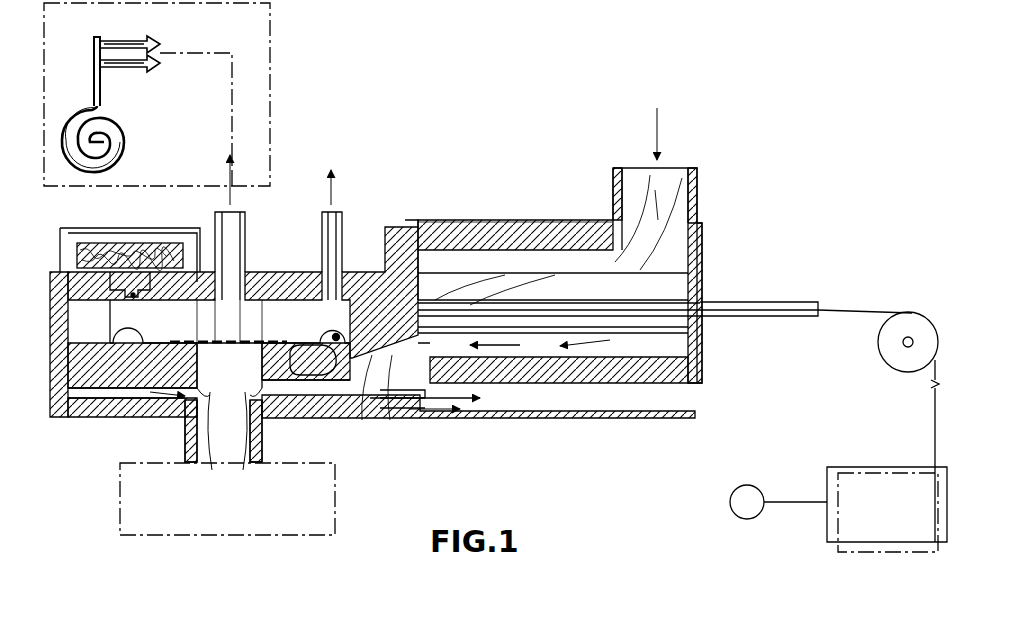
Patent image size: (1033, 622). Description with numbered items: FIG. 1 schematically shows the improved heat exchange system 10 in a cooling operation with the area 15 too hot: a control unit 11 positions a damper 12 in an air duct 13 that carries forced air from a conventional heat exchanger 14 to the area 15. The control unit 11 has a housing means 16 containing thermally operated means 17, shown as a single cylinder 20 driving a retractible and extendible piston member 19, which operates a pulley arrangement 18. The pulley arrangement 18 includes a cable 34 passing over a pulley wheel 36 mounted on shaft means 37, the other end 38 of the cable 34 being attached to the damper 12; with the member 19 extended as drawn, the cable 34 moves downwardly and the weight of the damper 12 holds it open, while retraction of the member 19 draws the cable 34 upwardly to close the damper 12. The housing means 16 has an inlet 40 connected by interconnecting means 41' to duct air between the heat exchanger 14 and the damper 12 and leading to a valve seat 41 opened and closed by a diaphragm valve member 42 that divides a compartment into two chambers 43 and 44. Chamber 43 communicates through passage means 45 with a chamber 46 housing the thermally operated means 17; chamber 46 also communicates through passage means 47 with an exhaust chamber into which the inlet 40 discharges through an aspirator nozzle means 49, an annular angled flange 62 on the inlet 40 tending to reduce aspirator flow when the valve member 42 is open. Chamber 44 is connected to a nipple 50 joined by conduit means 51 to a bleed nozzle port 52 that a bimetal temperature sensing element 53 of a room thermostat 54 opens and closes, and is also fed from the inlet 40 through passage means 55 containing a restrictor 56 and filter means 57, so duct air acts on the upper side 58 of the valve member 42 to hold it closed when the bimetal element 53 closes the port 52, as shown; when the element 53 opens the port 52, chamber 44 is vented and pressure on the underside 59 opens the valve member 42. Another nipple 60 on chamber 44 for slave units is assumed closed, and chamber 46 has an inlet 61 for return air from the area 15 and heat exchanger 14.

The heat exchange system 10 is at (790, 72).
The control unit 11 is at (480, 212).
The damper 12 is at (870, 553).
The air duct 13 is at (870, 465).
The heat exchanger 14 is at (736, 514).
The area 15 is at (252, 92).
The housing means 16 is at (505, 222).
The thermally operated means 17 is at (682, 288).
The pulley arrangement 18 is at (890, 292).
The retractible and extendible member 19 is at (765, 300).
The cylinder 20 is at (705, 328).
The cable 34 is at (862, 282).
The pulley wheel 36 is at (910, 320).
The shaft means 37 is at (902, 346).
The other end of cable 38 is at (917, 548).
The inlet 40 is at (185, 432).
The valve seat 41 is at (230, 326).
The interconnecting means 41' is at (185, 515).
The diaphragm valve member 42 is at (236, 312).
The chamber 43 is at (112, 355).
The chamber 44 is at (118, 312).
The passage means 45 is at (372, 360).
The chamber 46 is at (545, 262).
The passage means 47 is at (405, 390).
The aspirator nozzle means 49 is at (420, 400).
The nipple 50 is at (215, 225).
The conduit means 51 is at (232, 140).
The bleed nozzle port 52 is at (115, 66).
The bimetal temperature sensing element 53 is at (94, 80).
The thermostat 54 is at (136, 143).
The passage means 55 is at (153, 355).
The restrictor 56 is at (135, 296).
The filter means 57 is at (105, 243).
The upper side of diaphragm valve member 58 is at (318, 300).
The underside of valve member 59 is at (208, 345).
The nipple 60 is at (345, 232).
The inlet 61 is at (697, 205).
The annular and angled flange 62 is at (198, 415).